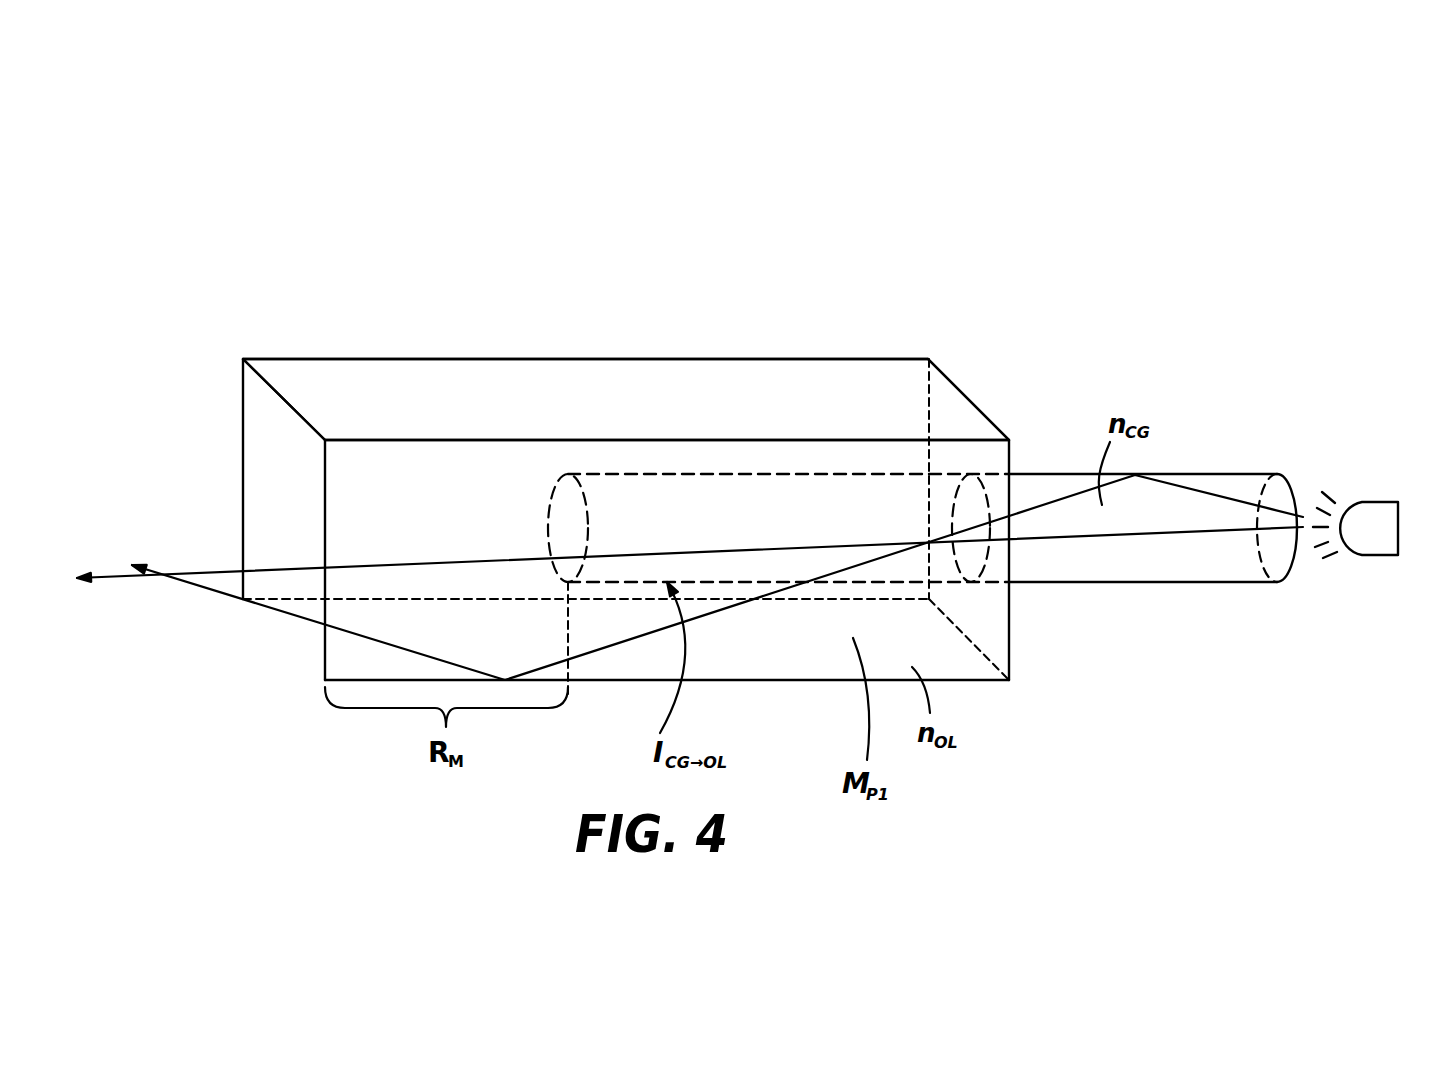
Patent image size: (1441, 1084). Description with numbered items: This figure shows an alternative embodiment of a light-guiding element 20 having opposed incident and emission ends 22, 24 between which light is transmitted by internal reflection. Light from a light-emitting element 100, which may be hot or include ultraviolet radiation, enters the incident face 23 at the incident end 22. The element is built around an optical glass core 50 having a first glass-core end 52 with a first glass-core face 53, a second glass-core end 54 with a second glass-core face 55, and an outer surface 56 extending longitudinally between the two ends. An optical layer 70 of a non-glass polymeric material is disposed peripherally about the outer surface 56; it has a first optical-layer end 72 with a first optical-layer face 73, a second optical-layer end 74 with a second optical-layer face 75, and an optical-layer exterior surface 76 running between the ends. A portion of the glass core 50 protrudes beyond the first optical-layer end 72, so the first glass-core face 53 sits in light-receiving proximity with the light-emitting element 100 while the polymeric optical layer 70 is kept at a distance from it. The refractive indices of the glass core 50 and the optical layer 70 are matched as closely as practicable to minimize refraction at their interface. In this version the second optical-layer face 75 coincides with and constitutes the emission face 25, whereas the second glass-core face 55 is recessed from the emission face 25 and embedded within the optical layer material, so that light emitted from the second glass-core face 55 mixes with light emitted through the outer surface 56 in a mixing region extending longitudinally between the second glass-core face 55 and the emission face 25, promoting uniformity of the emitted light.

The light-guiding element 20 is at (615, 483).
The optical layer 70 is at (477, 400).
The optical-layer exterior surface 76 is at (415, 398).
The second optical-layer end 74 is at (305, 408).
The first optical-layer end 72 is at (907, 359).
The first optical-layer face 73 is at (948, 403).
The emission end 24 is at (342, 622).
The second optical-layer face 75 is at (288, 620).
The emission face 25 is at (268, 578).
The second glass-core end 54 is at (597, 493).
The second glass-core face 55 is at (567, 515).
The first glass-core end 52 is at (1176, 556).
The outer surface 56 is at (1147, 582).
The first glass-core face 53 is at (1277, 567).
The incident end 22 is at (1262, 592).
The incident face 23 is at (1278, 492).
The light-emitting element 100 is at (1365, 523).
The optical glass core 50 is at (740, 537).